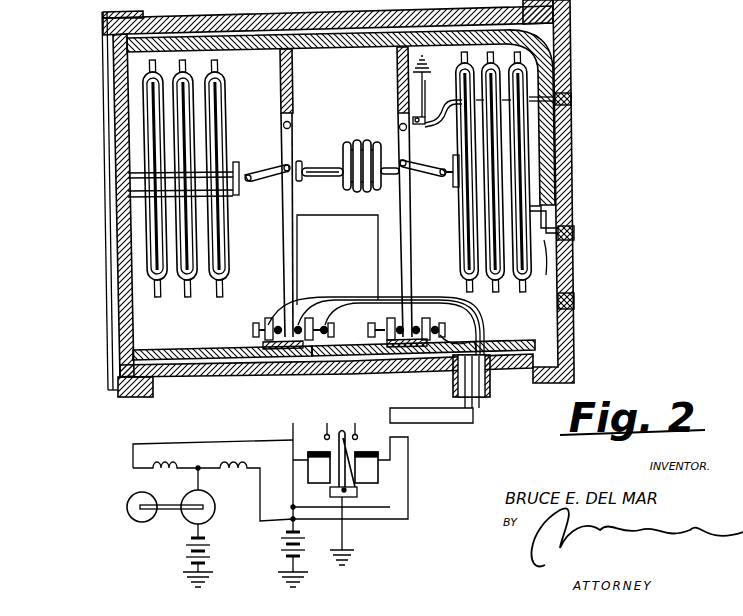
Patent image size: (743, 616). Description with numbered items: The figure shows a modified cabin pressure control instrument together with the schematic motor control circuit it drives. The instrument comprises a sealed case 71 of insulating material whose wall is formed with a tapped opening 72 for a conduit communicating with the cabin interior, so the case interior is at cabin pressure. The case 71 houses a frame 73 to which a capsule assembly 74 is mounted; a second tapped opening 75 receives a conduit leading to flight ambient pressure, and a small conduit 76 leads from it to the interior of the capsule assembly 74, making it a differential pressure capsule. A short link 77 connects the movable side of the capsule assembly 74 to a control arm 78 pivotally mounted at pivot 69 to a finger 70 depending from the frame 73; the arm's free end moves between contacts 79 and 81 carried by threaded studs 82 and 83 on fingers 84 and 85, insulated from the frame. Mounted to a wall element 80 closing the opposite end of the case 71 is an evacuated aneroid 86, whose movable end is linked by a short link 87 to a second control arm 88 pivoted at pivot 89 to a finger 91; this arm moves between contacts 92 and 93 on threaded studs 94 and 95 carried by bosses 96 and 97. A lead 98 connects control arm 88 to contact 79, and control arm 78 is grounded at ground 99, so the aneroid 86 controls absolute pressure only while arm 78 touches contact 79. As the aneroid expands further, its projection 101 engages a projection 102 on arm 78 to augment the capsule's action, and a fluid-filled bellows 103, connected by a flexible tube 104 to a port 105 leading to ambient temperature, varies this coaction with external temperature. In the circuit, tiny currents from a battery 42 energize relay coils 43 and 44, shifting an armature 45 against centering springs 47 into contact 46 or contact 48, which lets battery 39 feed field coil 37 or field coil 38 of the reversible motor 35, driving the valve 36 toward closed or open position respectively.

The motor 35 is at (210, 500).
The valve 36 is at (132, 516).
The field coil 37 is at (158, 443).
The field coil 38 is at (228, 443).
The battery 39 is at (208, 544).
The battery 42 is at (281, 551).
The relay coil 43 is at (308, 472).
The relay coil 44 is at (380, 470).
The armature 45 is at (352, 500).
The contact 46 is at (331, 430).
The centering springs 47 is at (333, 478).
The contact 48 is at (358, 432).
The pivot 69 is at (399, 125).
The finger 70 is at (398, 80).
The sealed case 71 is at (500, 372).
The tapped opening 72 is at (575, 302).
The frame 73 is at (328, 50).
The capsule assembly 74 is at (460, 224).
The tapped opening 75 is at (575, 235).
The small conduit 76 is at (550, 262).
The short link 77 is at (425, 163).
The control arm 78 is at (410, 200).
The contact 79 is at (398, 318).
The wall element 80 is at (120, 300).
The contact 81 is at (424, 318).
The threaded stud 82 is at (369, 328).
The threaded stud 83 is at (460, 305).
The finger 84 is at (393, 360).
The finger 85 is at (428, 360).
The aneroid 86 is at (226, 100).
The short link 87 is at (273, 167).
The second control arm 88 is at (283, 213).
The pivot 89 is at (292, 125).
The finger 91 is at (293, 86).
The contact 92 is at (268, 318).
The contact 93 is at (309, 318).
The threaded stud 94 is at (255, 324).
The threaded stud 95 is at (332, 322).
The boss 96 is at (255, 376).
The boss 97 is at (303, 376).
The lead 98 is at (328, 217).
The ground 99 is at (428, 64).
The projection 101 is at (300, 160).
The projection 102 is at (312, 176).
The bellows 103 is at (372, 140).
The flexible tube 104 is at (432, 104).
The port 105 is at (573, 98).